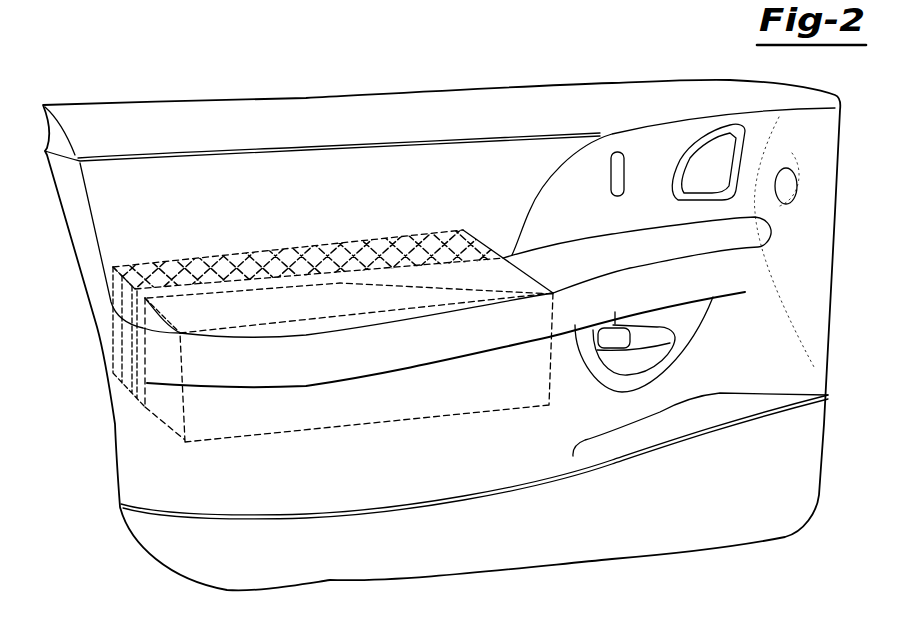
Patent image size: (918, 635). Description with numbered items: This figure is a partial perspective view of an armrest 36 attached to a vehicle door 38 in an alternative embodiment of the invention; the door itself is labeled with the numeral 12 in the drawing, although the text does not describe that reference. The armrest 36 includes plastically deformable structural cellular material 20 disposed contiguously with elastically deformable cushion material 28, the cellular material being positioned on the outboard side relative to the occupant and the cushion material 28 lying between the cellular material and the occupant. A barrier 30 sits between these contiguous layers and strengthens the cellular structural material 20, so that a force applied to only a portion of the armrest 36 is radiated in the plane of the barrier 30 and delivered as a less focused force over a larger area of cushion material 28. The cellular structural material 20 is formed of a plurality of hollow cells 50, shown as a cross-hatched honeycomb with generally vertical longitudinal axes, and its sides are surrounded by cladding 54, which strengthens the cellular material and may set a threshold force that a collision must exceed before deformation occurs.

The vehicle door 12 is at (174, 4).
The structural cellular material 20 is at (183, 260).
The cushion material 28 is at (370, 401).
The barrier 30 is at (148, 385).
The armrest 36 is at (562, 379).
The vehicle door 38 is at (322, 95).
The hollow cells 50 is at (280, 250).
The cladding 54 is at (133, 329).